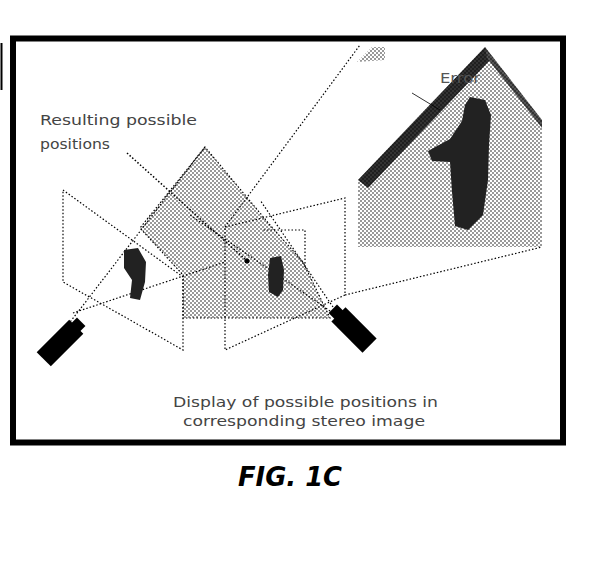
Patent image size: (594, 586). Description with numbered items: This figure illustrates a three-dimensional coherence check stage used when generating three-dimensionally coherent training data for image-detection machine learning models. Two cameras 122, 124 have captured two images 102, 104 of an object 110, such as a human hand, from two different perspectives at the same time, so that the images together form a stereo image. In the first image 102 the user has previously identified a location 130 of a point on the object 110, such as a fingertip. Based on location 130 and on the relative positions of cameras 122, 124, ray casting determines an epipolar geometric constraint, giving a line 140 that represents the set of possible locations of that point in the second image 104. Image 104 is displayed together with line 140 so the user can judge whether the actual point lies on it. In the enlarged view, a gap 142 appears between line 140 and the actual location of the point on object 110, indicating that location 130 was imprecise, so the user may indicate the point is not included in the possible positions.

The image 102 is at (97, 207).
The image 104 is at (334, 200).
The object 110 is at (127, 281).
The camera 122 is at (60, 359).
The camera 124 is at (357, 356).
The location 130 is at (124, 250).
The line 140 is at (245, 287).
The gap 142 is at (432, 106).